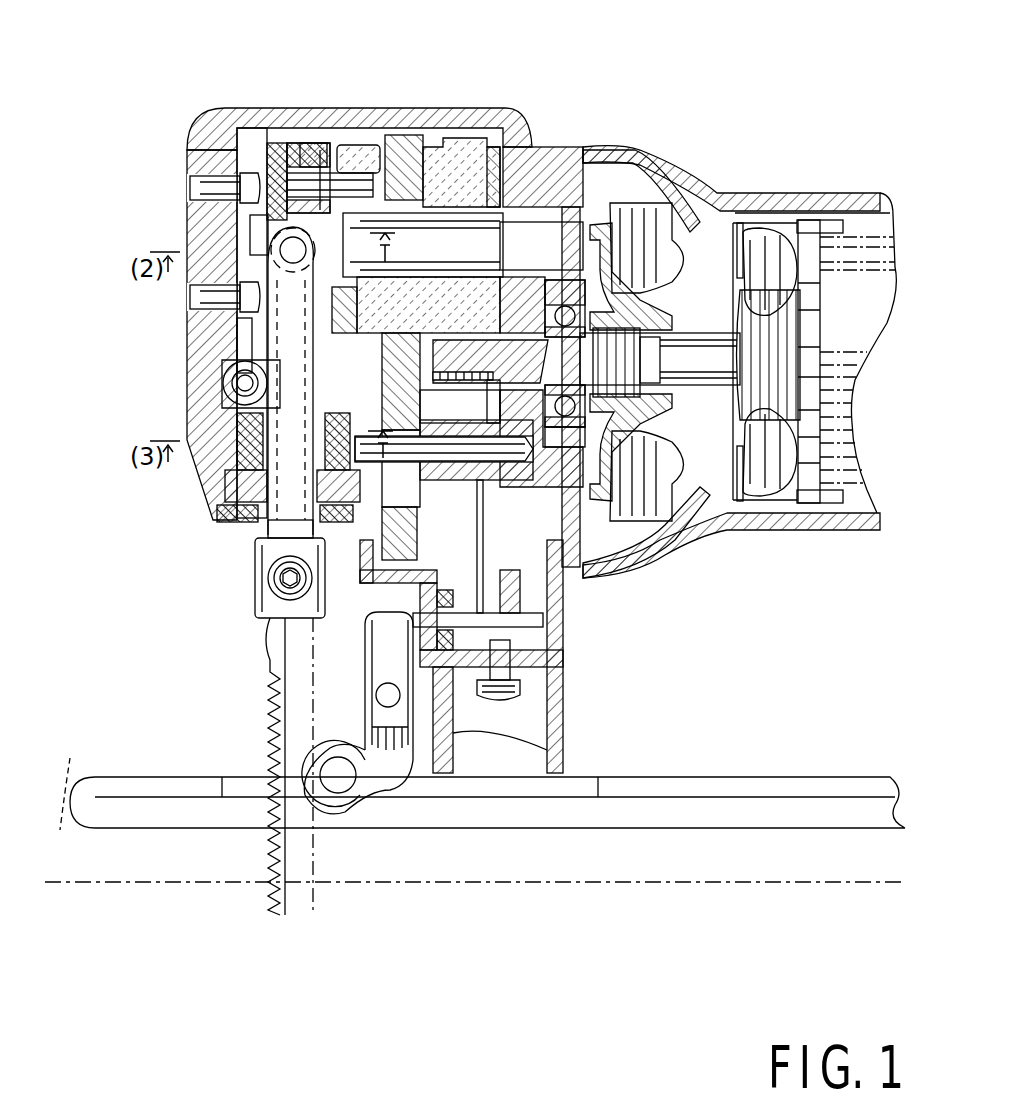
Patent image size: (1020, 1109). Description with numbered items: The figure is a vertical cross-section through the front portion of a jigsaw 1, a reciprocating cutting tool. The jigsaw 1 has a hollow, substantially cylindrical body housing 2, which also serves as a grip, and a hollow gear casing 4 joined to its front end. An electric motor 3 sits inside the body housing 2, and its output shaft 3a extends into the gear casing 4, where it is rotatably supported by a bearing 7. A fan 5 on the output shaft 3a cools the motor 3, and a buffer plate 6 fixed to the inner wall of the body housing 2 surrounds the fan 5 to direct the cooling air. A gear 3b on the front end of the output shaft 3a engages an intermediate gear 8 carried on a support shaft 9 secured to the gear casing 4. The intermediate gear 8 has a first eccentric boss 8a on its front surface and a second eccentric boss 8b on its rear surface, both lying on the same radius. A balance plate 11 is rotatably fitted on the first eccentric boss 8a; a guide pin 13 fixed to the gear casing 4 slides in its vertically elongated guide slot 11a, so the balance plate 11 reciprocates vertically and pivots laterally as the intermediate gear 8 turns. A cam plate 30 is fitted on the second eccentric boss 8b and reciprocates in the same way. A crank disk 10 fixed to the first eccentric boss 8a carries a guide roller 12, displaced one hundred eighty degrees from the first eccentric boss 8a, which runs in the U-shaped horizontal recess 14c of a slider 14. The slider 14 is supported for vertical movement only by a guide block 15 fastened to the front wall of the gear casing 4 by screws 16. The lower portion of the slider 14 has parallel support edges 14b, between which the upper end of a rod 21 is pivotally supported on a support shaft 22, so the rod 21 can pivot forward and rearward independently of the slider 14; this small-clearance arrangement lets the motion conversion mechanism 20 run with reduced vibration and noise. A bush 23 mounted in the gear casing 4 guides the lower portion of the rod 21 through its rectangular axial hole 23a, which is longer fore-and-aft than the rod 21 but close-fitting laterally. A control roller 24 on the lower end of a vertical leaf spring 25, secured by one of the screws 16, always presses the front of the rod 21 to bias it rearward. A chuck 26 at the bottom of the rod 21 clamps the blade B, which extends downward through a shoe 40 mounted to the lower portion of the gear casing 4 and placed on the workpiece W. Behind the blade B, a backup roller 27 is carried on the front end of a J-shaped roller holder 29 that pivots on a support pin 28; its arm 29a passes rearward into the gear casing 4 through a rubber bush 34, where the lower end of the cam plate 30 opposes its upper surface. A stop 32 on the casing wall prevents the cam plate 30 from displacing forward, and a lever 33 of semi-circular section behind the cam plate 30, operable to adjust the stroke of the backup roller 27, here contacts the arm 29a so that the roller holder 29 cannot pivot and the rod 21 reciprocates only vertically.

The jigsaw 1 is at (640, 108).
The body housing 2 is at (808, 195).
The electric motor 3 is at (843, 470).
The output shaft 3a is at (723, 515).
The gear 3b is at (530, 290).
The gear casing 4 is at (412, 126).
The fan 5 is at (665, 195).
The buffer plate 6 is at (650, 220).
The bearing 7 is at (575, 480).
The intermediate gear 8 is at (465, 170).
The first eccentric boss 8a is at (355, 345).
The second eccentric boss 8b is at (513, 293).
The support shaft 9 is at (500, 200).
The crank disk 10 is at (355, 150).
The balance plate 11 is at (397, 135).
The guide slot 11a is at (300, 548).
The guide roller 12 is at (290, 180).
The guide pin 13 is at (267, 522).
The slider 14 is at (303, 128).
The support edges 14b is at (250, 225).
The horizontal recess 14c is at (320, 150).
The guide block 15 is at (250, 175).
The screws 16 is at (207, 180).
The motion conversion mechanism 20 is at (258, 261).
The rod 21 is at (287, 418).
The support shaft 22 is at (243, 167).
The bush 23 is at (205, 485).
The axial hole 23a is at (240, 440).
The control roller 24 is at (240, 370).
The leaf spring 25 is at (225, 325).
The chuck 26 is at (253, 587).
The backup roller 27 is at (330, 742).
The support pin 28 is at (378, 693).
The roller holder 29 is at (380, 778).
The arm 29a is at (560, 685).
The cam plate 30 is at (520, 620).
The stop 32 is at (475, 550).
The lever 33 is at (495, 590).
The rubber bush 34 is at (450, 755).
The shoe 40 is at (750, 790).
The blade B is at (270, 715).
The workpiece W is at (71, 778).